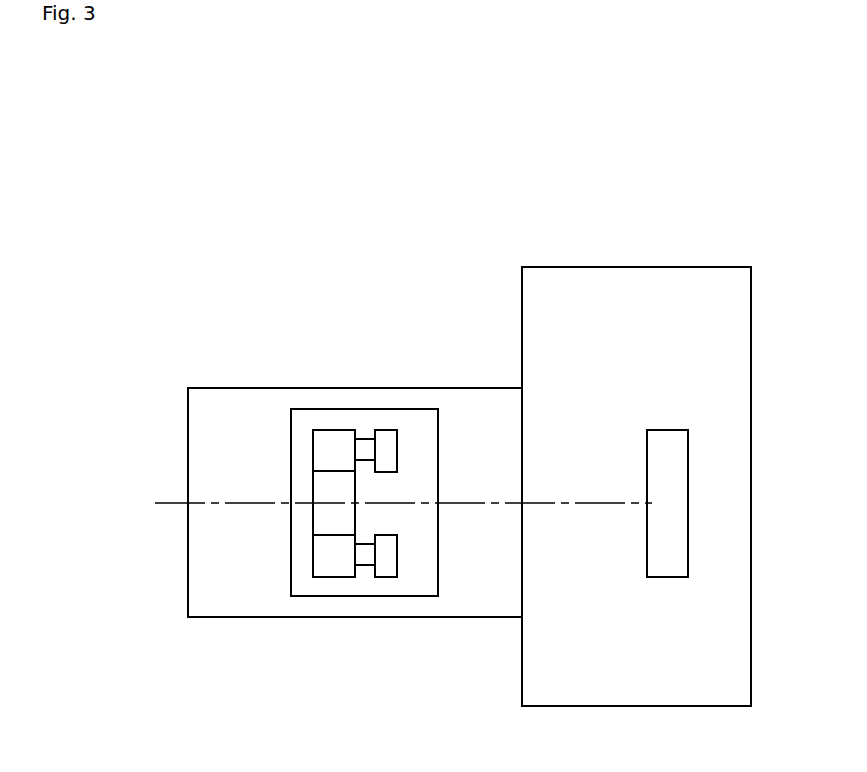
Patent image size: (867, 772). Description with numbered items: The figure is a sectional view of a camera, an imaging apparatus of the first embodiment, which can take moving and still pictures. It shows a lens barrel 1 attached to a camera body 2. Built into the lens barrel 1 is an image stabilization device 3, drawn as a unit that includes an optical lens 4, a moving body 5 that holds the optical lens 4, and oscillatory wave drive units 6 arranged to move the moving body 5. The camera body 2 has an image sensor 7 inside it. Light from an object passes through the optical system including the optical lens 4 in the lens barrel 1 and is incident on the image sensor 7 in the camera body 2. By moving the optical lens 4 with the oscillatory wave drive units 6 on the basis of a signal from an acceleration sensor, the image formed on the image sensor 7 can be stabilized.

The lens barrel 1 is at (210, 397).
The camera body 2 is at (736, 307).
The image stabilization device 3 is at (303, 417).
The optical lens 4 is at (322, 523).
The moving body 5 is at (330, 568).
The oscillatory wave drive units 6 is at (383, 437).
The image sensor 7 is at (681, 481).